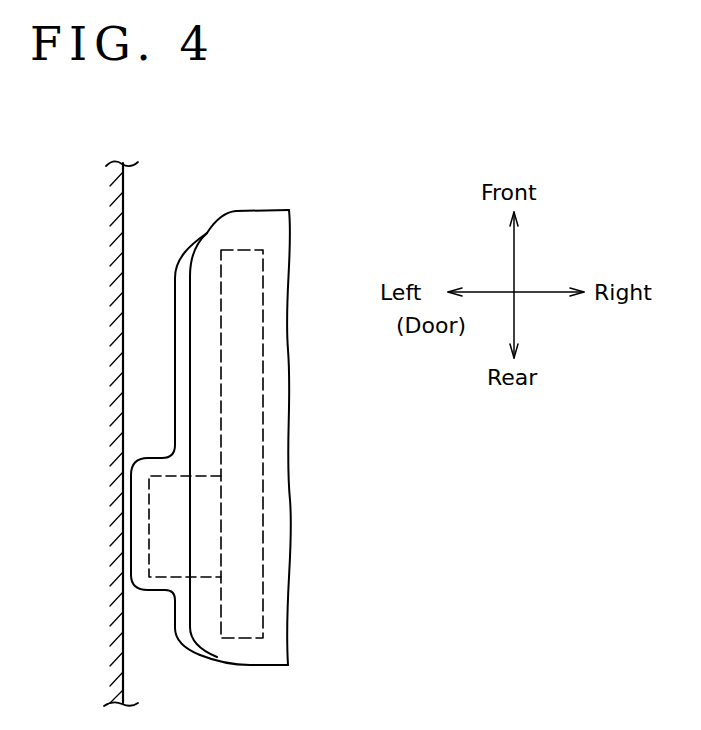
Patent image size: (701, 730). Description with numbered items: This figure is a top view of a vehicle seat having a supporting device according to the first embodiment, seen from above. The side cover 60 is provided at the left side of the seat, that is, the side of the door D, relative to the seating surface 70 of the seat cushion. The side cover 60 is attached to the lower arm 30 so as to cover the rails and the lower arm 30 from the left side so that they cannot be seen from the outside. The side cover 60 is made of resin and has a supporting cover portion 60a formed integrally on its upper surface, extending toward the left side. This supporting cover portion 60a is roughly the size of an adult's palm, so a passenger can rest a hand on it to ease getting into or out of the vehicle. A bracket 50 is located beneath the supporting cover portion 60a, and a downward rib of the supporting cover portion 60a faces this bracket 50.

The door D is at (123, 220).
The seating surface 70 is at (262, 218).
The side cover 60 is at (175, 370).
The supporting cover portion 60a is at (162, 505).
The bracket 50 is at (150, 548).
The lower arm 30 is at (263, 441).